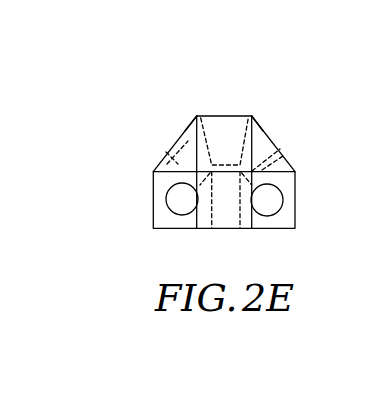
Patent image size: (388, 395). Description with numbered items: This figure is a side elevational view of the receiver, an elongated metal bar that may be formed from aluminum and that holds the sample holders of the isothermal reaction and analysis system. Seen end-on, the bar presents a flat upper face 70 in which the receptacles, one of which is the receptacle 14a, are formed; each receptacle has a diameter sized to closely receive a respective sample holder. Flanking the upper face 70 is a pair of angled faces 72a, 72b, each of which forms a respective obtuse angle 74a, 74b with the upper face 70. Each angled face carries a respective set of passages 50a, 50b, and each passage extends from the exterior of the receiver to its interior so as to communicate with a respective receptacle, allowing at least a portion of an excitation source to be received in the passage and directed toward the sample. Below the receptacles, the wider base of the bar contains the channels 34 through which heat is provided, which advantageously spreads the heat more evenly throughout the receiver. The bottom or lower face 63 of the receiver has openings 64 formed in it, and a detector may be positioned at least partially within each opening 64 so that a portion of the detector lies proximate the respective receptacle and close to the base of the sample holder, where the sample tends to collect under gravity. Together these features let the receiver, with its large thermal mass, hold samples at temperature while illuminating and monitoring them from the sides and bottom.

The receptacle 14a is at (222, 128).
The upper face 70 is at (200, 113).
The obtuse angle 74a is at (242, 115).
The obtuse angle 74b is at (188, 138).
The angled face 72a is at (258, 118).
The angled face 72b is at (193, 116).
The passage 50a is at (267, 147).
The passage 50b is at (161, 158).
The channel 34 is at (168, 208).
The opening 64 is at (223, 217).
The bottom or lower face 63 is at (272, 228).